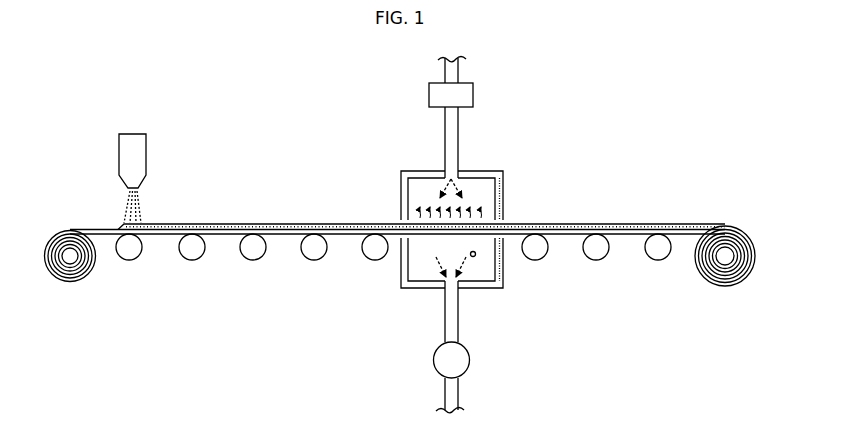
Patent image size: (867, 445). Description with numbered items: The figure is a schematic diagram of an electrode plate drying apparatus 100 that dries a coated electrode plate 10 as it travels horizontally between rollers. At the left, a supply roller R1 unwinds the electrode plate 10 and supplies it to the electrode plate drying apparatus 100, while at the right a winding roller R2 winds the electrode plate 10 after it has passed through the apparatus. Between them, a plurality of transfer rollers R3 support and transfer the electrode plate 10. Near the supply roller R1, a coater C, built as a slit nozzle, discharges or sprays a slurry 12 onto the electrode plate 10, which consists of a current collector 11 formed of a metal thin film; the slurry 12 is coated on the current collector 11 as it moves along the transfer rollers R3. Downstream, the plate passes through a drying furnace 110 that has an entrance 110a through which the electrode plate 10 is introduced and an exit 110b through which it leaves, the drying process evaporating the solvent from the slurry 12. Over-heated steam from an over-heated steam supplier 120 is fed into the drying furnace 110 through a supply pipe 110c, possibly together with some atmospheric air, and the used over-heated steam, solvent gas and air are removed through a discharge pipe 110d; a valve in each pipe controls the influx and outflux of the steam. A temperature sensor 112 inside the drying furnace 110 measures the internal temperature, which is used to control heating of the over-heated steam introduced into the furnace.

The electrode plate drying apparatus 100 is at (90, 71).
The coater C is at (146, 155).
The electrode plate 10 is at (330, 181).
The current collector 11 is at (275, 229).
The slurry 12 is at (324, 226).
The drying furnace 110 is at (503, 195).
The entrance 110a is at (398, 238).
The exit 110b is at (493, 238).
The supply pipe 110c is at (455, 142).
The discharge pipe 110d is at (450, 318).
The temperature sensor 112 is at (475, 258).
The over-heated steam supplier 120 is at (474, 95).
The supply roller R1 is at (70, 264).
The winding roller R2 is at (725, 262).
The transfer roller R3 is at (192, 254).